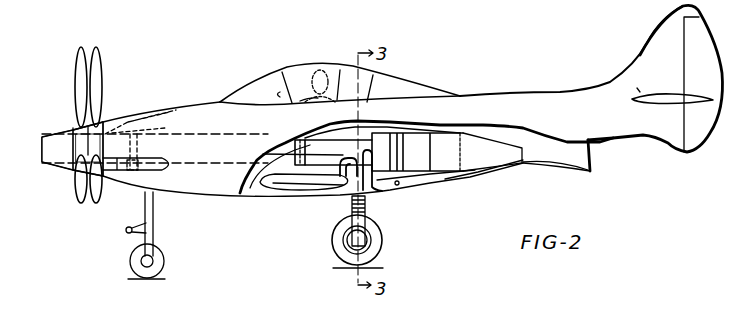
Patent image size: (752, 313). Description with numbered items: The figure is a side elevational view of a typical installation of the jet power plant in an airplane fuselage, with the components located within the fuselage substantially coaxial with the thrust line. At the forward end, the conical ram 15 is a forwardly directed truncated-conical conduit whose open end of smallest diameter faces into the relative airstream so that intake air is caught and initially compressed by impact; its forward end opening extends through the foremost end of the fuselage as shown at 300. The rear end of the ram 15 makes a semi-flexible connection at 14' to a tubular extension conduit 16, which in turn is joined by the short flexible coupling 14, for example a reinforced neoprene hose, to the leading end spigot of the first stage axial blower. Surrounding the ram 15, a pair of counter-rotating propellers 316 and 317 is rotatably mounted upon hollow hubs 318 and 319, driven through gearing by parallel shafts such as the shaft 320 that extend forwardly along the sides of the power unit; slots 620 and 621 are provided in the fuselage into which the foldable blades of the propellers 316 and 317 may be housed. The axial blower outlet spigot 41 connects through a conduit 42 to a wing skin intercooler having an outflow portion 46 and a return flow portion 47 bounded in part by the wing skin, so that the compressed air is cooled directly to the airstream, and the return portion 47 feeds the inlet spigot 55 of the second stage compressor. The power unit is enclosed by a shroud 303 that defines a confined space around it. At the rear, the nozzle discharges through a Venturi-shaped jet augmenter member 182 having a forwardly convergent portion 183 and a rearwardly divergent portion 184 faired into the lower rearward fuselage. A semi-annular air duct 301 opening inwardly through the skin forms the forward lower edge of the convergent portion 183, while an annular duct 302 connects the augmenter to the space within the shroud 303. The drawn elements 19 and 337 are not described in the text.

The foremost end of the fuselage 300 is at (42, 150).
The conical ram 15 is at (42, 137).
The hollow hub 318 is at (73, 131).
The hollow hub 319 is at (92, 148).
The propeller 316 is at (76, 79).
The propeller 317 is at (100, 83).
The drive shafts 19 is at (133, 116).
The slot 620 is at (164, 113).
The semi-flexible connection 14' is at (151, 124).
The tubular extension conduit 16 is at (212, 136).
The slot 621 is at (153, 168).
The shroud 303 is at (438, 128).
The parallel shaft 320 is at (287, 148).
The axial blower outlet spigot 41 is at (350, 157).
The short flexible coupling 14 is at (290, 152).
The annular duct 302 is at (441, 172).
The air duct 301 is at (470, 185).
The forwardly convergent portion 183 is at (503, 173).
The rearwardly divergent portion 184 is at (547, 163).
The jet augmenter member 182 is at (566, 163).
The conduit 42 is at (343, 174).
The inlet spigot 55 is at (371, 188).
The outflow portion 46 is at (260, 190).
The return flow portion 47 is at (296, 195).
The main wheel 337 is at (331, 238).